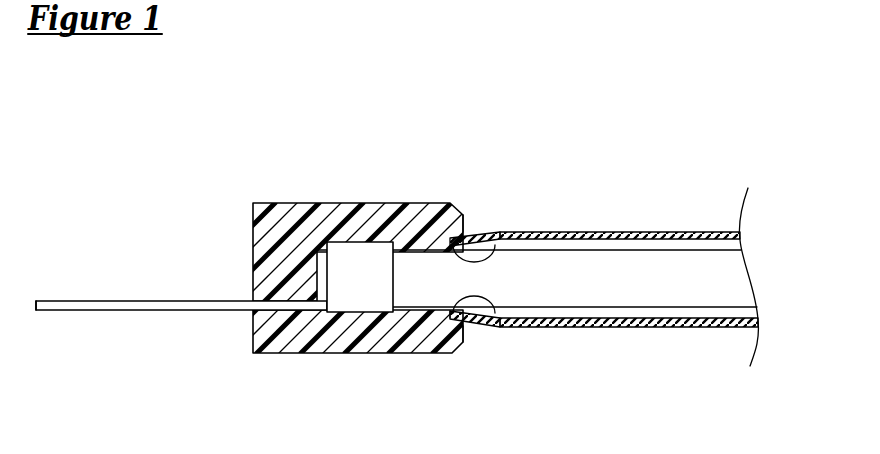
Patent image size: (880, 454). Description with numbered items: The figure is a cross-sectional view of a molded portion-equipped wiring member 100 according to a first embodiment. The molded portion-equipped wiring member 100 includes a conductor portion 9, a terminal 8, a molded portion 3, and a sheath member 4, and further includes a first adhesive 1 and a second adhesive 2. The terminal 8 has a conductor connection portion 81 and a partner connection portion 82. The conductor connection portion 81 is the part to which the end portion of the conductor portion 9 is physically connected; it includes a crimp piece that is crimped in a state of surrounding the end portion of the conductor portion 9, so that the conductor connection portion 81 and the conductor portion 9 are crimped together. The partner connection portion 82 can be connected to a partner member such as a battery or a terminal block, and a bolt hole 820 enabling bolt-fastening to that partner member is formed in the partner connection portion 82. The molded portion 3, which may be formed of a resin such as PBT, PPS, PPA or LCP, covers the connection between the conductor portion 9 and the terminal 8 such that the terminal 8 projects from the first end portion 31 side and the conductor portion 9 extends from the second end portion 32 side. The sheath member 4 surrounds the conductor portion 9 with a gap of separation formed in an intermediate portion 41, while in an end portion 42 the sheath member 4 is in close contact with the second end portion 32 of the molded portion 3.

The molded portion-equipped wiring member 100 is at (649, 132).
The first adhesive 1 is at (458, 216).
The second adhesive 2 is at (487, 240).
The molded portion 3 is at (259, 187).
The first end portion 31 is at (254, 334).
The second end portion 32 is at (466, 322).
The sheath member 4 is at (718, 214).
The intermediate portion 41 is at (663, 231).
The end portion 42 is at (477, 239).
The terminal 8 is at (163, 323).
The conductor connection portion 81 is at (358, 262).
The partner connection portion 82 is at (163, 302).
The bolt hole 820 is at (68, 309).
The conductor portion 9 is at (743, 280).